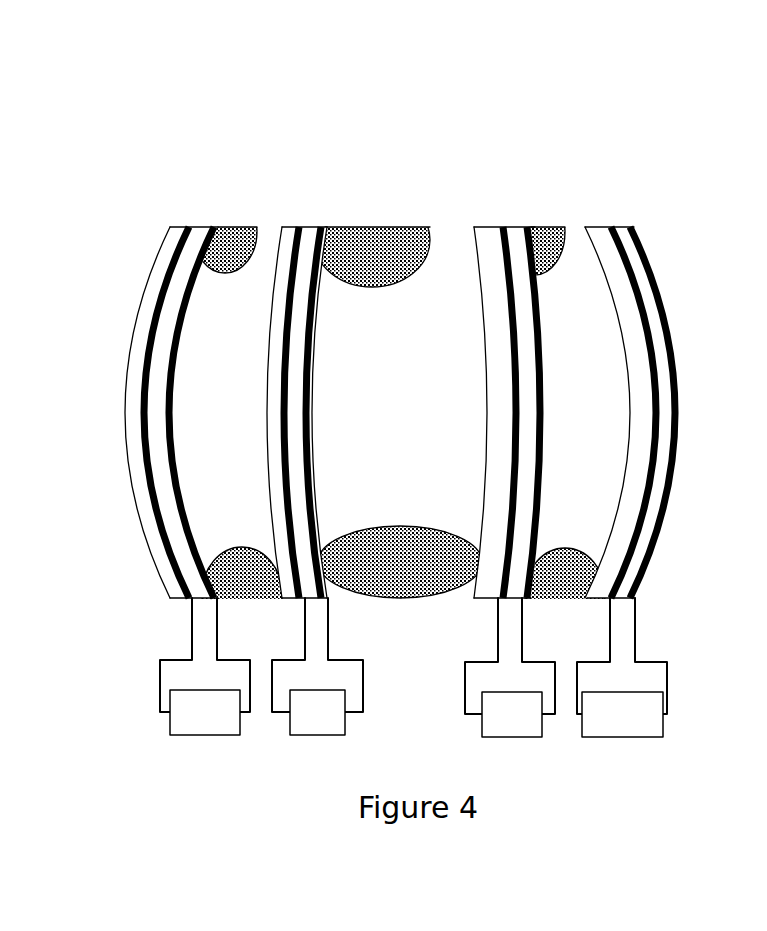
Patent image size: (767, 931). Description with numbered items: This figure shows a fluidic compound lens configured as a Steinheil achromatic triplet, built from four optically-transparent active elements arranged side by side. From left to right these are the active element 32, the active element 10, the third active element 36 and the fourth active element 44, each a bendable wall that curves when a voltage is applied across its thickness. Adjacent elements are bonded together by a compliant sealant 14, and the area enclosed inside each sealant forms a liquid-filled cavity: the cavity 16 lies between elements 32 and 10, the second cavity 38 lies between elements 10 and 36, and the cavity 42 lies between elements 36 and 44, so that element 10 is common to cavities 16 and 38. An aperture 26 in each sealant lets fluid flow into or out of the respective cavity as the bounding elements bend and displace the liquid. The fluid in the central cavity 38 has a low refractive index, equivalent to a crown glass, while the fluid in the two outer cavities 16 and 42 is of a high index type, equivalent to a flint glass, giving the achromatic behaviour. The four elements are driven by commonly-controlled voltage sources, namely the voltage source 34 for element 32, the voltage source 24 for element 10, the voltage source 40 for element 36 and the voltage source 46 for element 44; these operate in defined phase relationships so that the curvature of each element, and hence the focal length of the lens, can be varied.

The active element 10 is at (302, 207).
The compliant sealant 14 is at (243, 592).
The cavity 16 is at (213, 342).
The voltage source 24 is at (322, 738).
The aperture 26 is at (263, 237).
The active element 32 is at (119, 331).
The voltage source 34 is at (200, 738).
The third active element 36 is at (493, 207).
The second cavity 38 is at (383, 412).
The voltage source 40 is at (522, 738).
The cavity 42 is at (585, 410).
The fourth active element 44 is at (674, 325).
The voltage source 46 is at (648, 738).